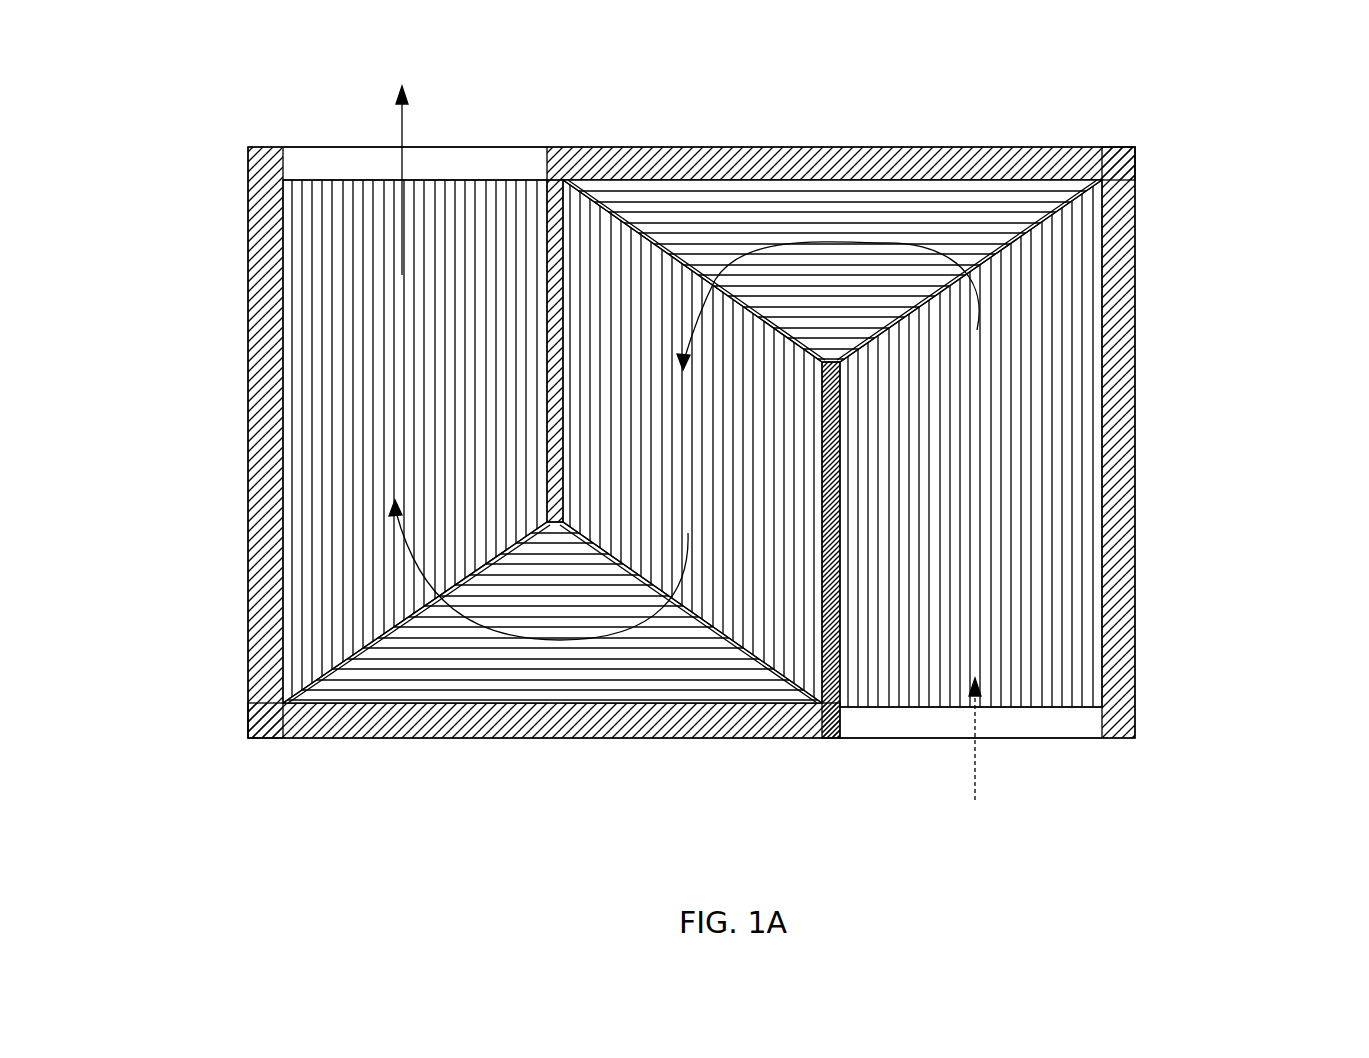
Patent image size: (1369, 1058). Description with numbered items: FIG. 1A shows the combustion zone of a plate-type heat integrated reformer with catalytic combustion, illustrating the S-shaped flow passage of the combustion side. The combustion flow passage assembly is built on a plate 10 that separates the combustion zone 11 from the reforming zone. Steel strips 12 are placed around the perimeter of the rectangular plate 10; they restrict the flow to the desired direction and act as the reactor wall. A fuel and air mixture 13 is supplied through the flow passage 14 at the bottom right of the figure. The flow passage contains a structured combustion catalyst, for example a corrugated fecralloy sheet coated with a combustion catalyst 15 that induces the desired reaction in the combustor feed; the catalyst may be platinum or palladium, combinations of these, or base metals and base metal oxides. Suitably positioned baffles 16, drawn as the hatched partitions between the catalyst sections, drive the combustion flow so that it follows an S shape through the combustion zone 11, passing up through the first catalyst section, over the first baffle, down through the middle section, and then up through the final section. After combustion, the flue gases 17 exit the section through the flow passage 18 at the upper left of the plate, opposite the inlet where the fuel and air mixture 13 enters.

The plate 10 is at (248, 443).
The combustion zone 11 is at (380, 393).
The steel strips 12 is at (970, 148).
The fuel and air mixture 13 is at (975, 800).
The flow passage 14 is at (1043, 750).
The combustion catalyst 15 is at (990, 491).
The baffles 16 is at (592, 205).
The flue gases 17 is at (394, 145).
The flow passage 18 is at (316, 160).